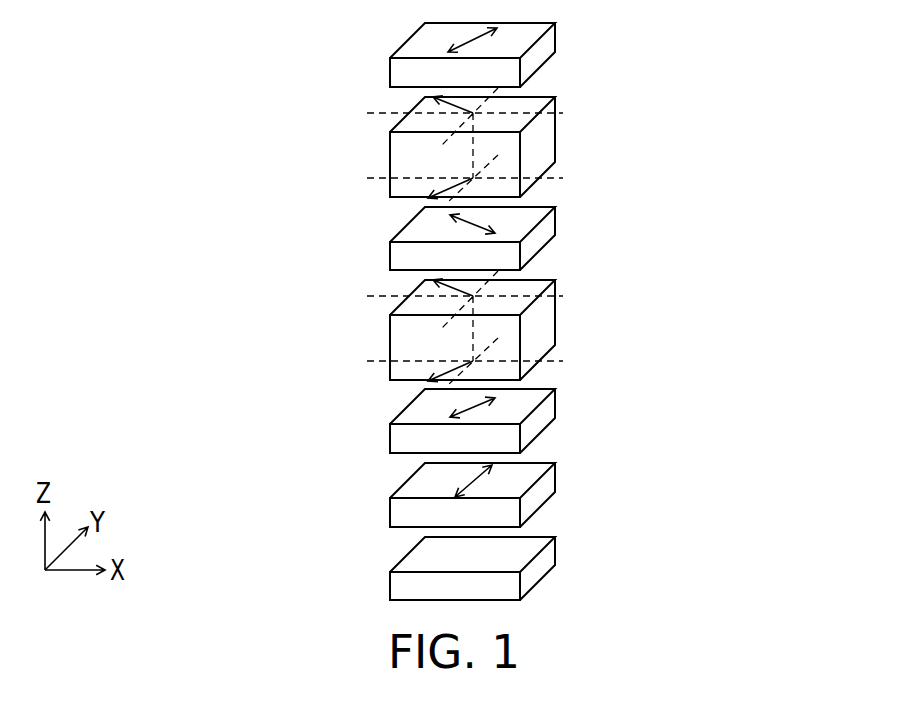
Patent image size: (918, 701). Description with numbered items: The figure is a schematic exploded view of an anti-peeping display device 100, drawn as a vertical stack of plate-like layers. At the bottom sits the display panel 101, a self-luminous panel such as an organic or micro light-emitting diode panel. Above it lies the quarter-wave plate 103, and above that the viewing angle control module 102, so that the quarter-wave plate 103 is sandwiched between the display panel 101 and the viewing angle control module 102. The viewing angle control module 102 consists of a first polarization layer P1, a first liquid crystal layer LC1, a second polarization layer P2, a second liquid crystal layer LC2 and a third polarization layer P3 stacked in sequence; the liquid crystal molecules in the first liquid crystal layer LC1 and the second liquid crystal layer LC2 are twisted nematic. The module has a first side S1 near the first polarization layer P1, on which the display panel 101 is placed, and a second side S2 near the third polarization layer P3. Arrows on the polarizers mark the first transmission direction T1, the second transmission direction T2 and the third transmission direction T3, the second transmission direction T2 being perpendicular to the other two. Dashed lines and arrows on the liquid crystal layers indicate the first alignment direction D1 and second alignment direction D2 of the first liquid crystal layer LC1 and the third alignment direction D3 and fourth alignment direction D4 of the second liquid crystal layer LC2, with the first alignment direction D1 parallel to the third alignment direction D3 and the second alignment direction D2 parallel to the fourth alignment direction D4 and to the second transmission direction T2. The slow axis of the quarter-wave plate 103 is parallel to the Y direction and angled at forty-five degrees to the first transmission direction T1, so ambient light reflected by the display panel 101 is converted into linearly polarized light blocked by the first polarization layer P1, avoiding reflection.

The anti-peeping display device 100 is at (760, 617).
The display panel 101 is at (550, 552).
The viewing angle control module 102 is at (645, 23).
The quarter-wave plate 103 is at (550, 478).
The first polarization layer P1 is at (550, 405).
The second polarization layer P2 is at (550, 222).
The third polarization layer P3 is at (550, 42).
The first liquid crystal layer LC1 is at (550, 322).
The second liquid crystal layer LC2 is at (550, 137).
The first transmission direction T1 is at (468, 408).
The second transmission direction T2 is at (465, 226).
The third transmission direction T3 is at (466, 39).
The first alignment direction D1 is at (445, 374).
The second alignment direction D2 is at (448, 296).
The third alignment direction D3 is at (443, 190).
The fourth alignment direction D4 is at (448, 113).
The first side S1 is at (561, 441).
The second side S2 is at (563, 8).